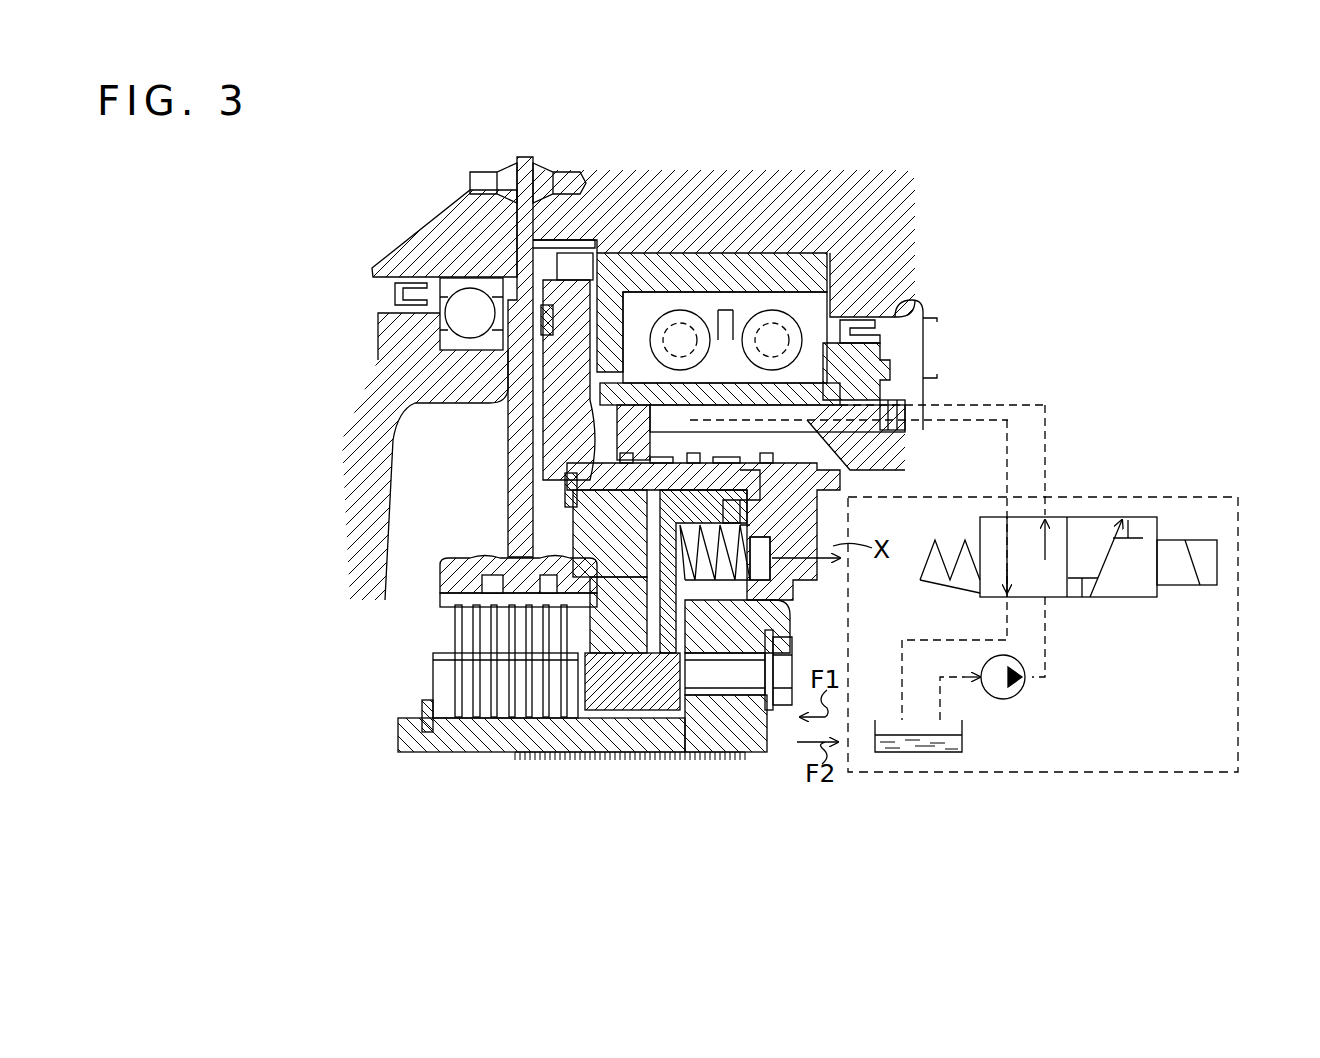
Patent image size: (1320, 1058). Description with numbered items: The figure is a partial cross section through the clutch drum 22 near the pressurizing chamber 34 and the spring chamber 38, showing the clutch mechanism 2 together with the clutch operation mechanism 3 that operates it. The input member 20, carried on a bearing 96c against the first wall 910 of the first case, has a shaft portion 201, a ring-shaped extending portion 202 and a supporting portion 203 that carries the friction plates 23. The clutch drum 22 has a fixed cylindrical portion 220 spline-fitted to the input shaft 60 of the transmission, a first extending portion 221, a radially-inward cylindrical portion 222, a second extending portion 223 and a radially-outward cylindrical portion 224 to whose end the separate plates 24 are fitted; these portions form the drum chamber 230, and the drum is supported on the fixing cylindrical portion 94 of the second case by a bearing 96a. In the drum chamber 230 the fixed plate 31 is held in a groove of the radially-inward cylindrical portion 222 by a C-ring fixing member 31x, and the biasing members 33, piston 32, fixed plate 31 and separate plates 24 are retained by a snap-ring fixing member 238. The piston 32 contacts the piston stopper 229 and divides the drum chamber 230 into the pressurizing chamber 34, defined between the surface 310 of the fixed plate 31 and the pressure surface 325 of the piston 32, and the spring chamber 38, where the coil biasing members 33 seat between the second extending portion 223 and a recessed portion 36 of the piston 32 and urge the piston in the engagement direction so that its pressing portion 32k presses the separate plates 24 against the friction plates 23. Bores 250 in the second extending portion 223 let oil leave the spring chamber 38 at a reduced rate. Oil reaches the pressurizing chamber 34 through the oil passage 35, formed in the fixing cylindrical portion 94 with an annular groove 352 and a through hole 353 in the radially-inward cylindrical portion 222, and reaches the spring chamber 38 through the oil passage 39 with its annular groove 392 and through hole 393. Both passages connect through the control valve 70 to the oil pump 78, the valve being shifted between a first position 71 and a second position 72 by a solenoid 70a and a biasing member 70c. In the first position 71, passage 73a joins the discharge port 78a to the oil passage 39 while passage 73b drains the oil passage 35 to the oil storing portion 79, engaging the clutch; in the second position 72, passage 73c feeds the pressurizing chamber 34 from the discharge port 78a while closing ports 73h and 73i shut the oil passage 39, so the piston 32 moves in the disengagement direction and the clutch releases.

The clutch mechanism 2 is at (369, 659).
The clutch operation mechanism 3 is at (786, 757).
The input member 20 is at (456, 205).
The clutch drum 22 is at (738, 482).
The friction plates 23 is at (455, 622).
The separate plates 24 is at (470, 686).
The fixed plate 31 is at (560, 520).
The fixing member 31x is at (567, 492).
The piston 32 is at (640, 752).
The pressing portion 32k is at (548, 760).
The biasing members 33 is at (767, 494).
The pressurizing chamber 34 is at (672, 752).
The oil passage 35 is at (685, 268).
The biasing member supporting recessed portion 36 is at (758, 506).
The spring chamber 38 is at (815, 572).
The oil passage 39 is at (900, 330).
The input shaft 60 is at (866, 185).
The control valve 70 is at (1240, 501).
The solenoid 70a is at (1187, 585).
The biasing member 70c is at (931, 565).
The first position 71 is at (1053, 597).
The second position 72 is at (1130, 590).
The passage 73a is at (1080, 597).
The passage 73b is at (1007, 567).
The passage 73c is at (1125, 590).
The closing port 73h is at (1130, 522).
The closing port 73i is at (1108, 595).
The oil pump 78 is at (1005, 698).
The discharge port 78a is at (1025, 686).
The oil storing portion 79 is at (960, 744).
The fixing cylindrical portion 94 is at (885, 378).
The bearing 96a is at (714, 282).
The bearing 96c is at (470, 313).
The shaft portion 201 is at (458, 188).
The extending portion 202 is at (485, 368).
The supporting portion 203 is at (440, 581).
The fixed cylindrical portion 220 is at (746, 492).
The first extending portion 221 is at (510, 410).
The radially-inward cylindrical portion 222 is at (547, 452).
The second extending portion 223 is at (812, 594).
The radially-outward cylindrical portion 224 is at (611, 752).
The piston stopper 229 is at (720, 740).
The drum chamber 230 is at (797, 642).
The fixing member 238 is at (425, 708).
The bores 250 is at (878, 545).
The surface 310 is at (575, 752).
The pressure surface 325 is at (545, 752).
The annular groove 352 is at (620, 280).
The through hole 353 is at (548, 250).
The annular groove 392 is at (848, 270).
The through hole 393 is at (845, 312).
The first wall 910 is at (400, 421).